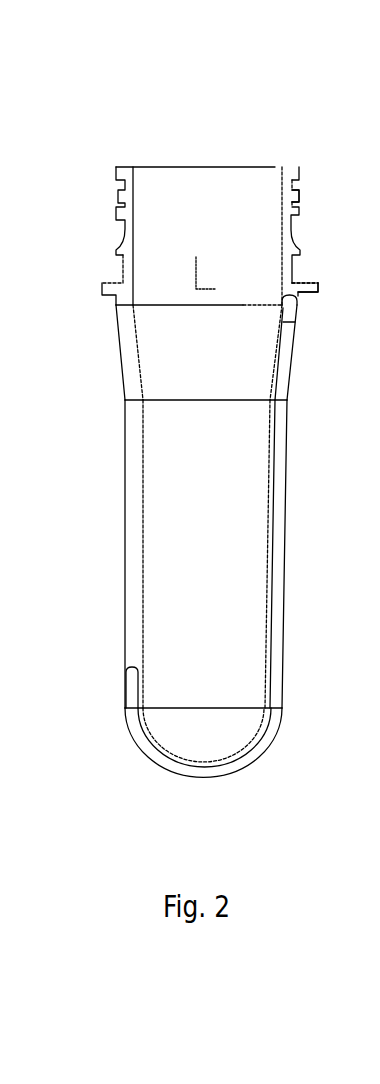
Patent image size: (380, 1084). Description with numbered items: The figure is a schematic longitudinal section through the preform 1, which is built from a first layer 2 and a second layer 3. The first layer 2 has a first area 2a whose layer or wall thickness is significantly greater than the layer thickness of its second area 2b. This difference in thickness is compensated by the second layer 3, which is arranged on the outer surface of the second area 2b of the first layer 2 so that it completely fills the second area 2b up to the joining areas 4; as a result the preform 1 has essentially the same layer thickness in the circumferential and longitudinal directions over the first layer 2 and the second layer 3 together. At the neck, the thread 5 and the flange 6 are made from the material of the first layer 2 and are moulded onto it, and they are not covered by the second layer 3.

The preform 1 is at (309, 155).
The first layer 2 is at (182, 160).
The first area of the first layer 2a is at (125, 577).
The second area of the first layer 2b is at (143, 692).
The second layer 3 is at (280, 522).
The joining area 4 is at (299, 303).
The thread 5 is at (300, 207).
The flange 6 is at (312, 288).